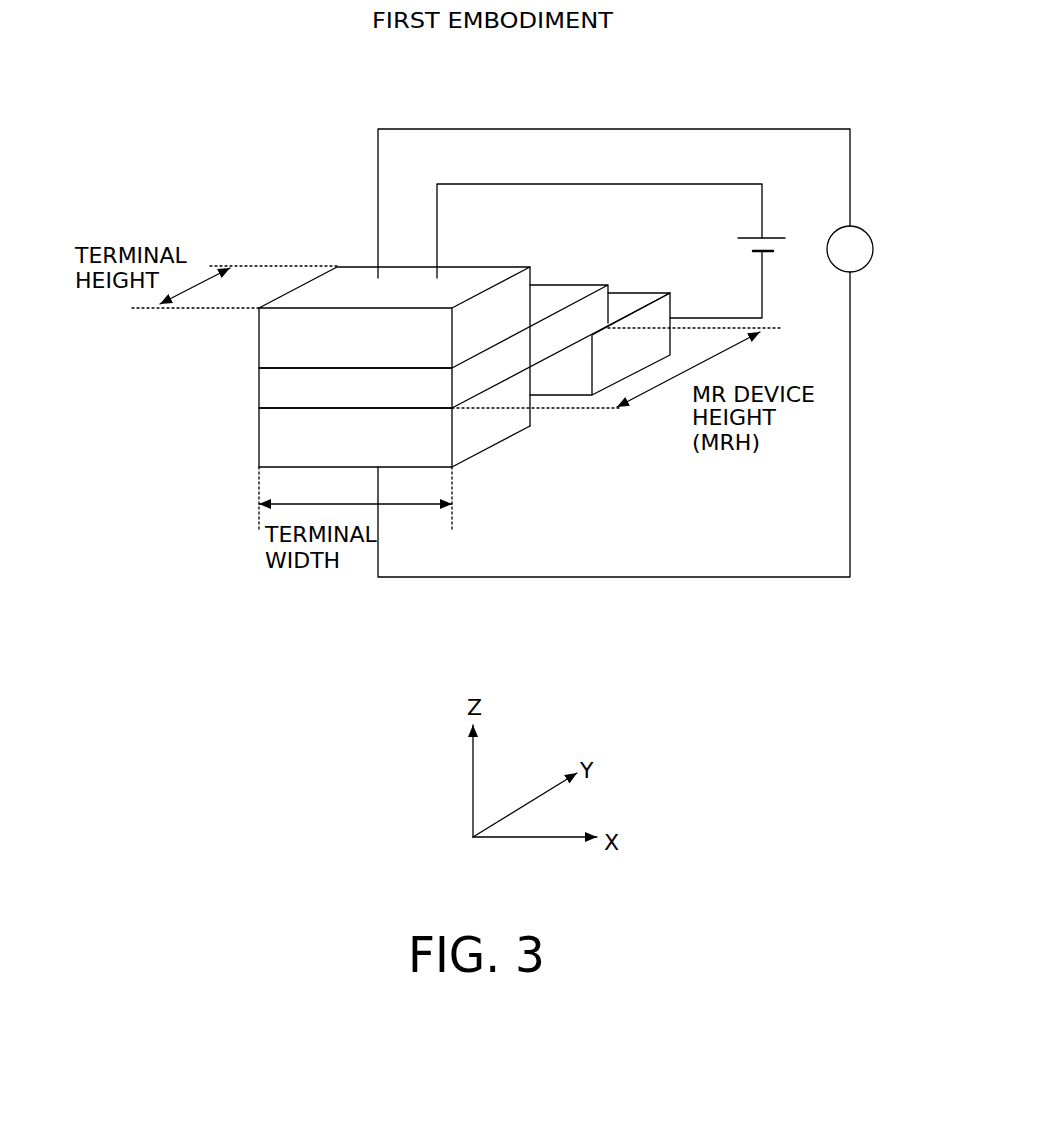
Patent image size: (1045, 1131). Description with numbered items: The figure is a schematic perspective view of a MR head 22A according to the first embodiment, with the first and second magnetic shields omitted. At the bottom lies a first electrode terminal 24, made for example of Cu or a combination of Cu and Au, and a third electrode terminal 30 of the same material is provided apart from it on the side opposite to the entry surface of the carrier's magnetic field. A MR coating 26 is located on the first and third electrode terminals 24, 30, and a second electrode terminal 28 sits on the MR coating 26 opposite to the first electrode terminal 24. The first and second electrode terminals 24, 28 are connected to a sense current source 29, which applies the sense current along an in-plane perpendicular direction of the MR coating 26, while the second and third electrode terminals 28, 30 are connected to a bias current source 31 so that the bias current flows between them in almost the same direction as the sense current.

The MR head 22A is at (434, 341).
The first electrode terminal 24 is at (490, 435).
The MR coating 26 is at (263, 392).
The second electrode terminal 28 is at (350, 278).
The sense current source 29 is at (860, 227).
The third electrode terminal 30 is at (630, 302).
The bias current source 31 is at (767, 238).